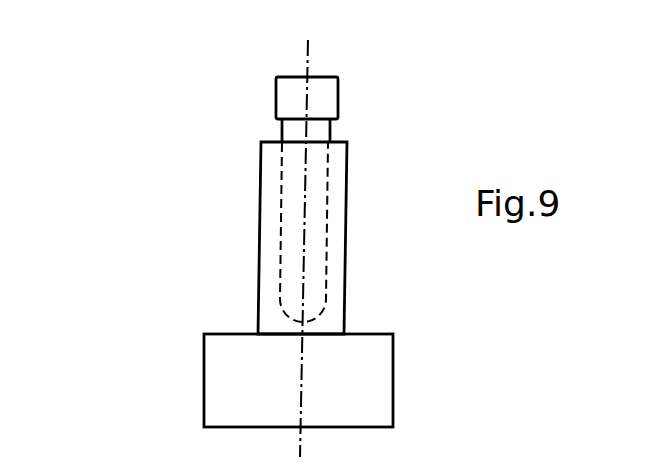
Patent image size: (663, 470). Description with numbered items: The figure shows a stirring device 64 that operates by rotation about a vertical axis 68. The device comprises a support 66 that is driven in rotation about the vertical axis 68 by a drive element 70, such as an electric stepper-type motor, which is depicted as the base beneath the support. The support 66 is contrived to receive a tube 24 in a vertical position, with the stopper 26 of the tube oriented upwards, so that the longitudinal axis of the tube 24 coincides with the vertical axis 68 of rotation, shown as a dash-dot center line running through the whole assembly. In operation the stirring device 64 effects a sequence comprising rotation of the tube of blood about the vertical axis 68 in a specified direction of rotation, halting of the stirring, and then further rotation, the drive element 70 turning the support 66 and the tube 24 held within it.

The stirring device 64 is at (168, 199).
The support 66 is at (345, 288).
The stopper 26 is at (334, 87).
The tube 24 is at (330, 128).
The vertical axis 68 is at (306, 50).
The drive element 70 is at (393, 372).